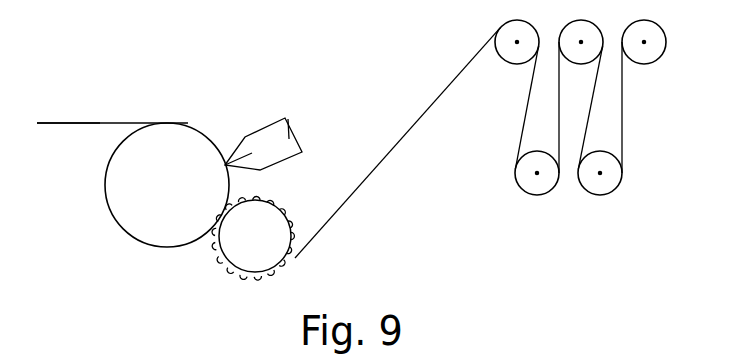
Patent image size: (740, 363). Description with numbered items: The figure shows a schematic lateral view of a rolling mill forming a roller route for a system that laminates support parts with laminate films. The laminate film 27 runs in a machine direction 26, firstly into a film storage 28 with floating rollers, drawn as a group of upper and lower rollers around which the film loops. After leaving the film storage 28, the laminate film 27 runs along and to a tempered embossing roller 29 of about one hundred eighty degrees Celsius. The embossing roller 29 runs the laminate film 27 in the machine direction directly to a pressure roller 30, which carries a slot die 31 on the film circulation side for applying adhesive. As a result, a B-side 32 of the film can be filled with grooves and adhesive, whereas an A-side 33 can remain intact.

The machine direction 26 is at (572, 238).
The laminate film 27 is at (388, 152).
The film storage 28 is at (577, 123).
The embossing roller 29 is at (262, 257).
The pressure roller 30 is at (143, 215).
The slot die 31 is at (289, 121).
The B-side 32 is at (68, 123).
The A-side 33 is at (68, 123).